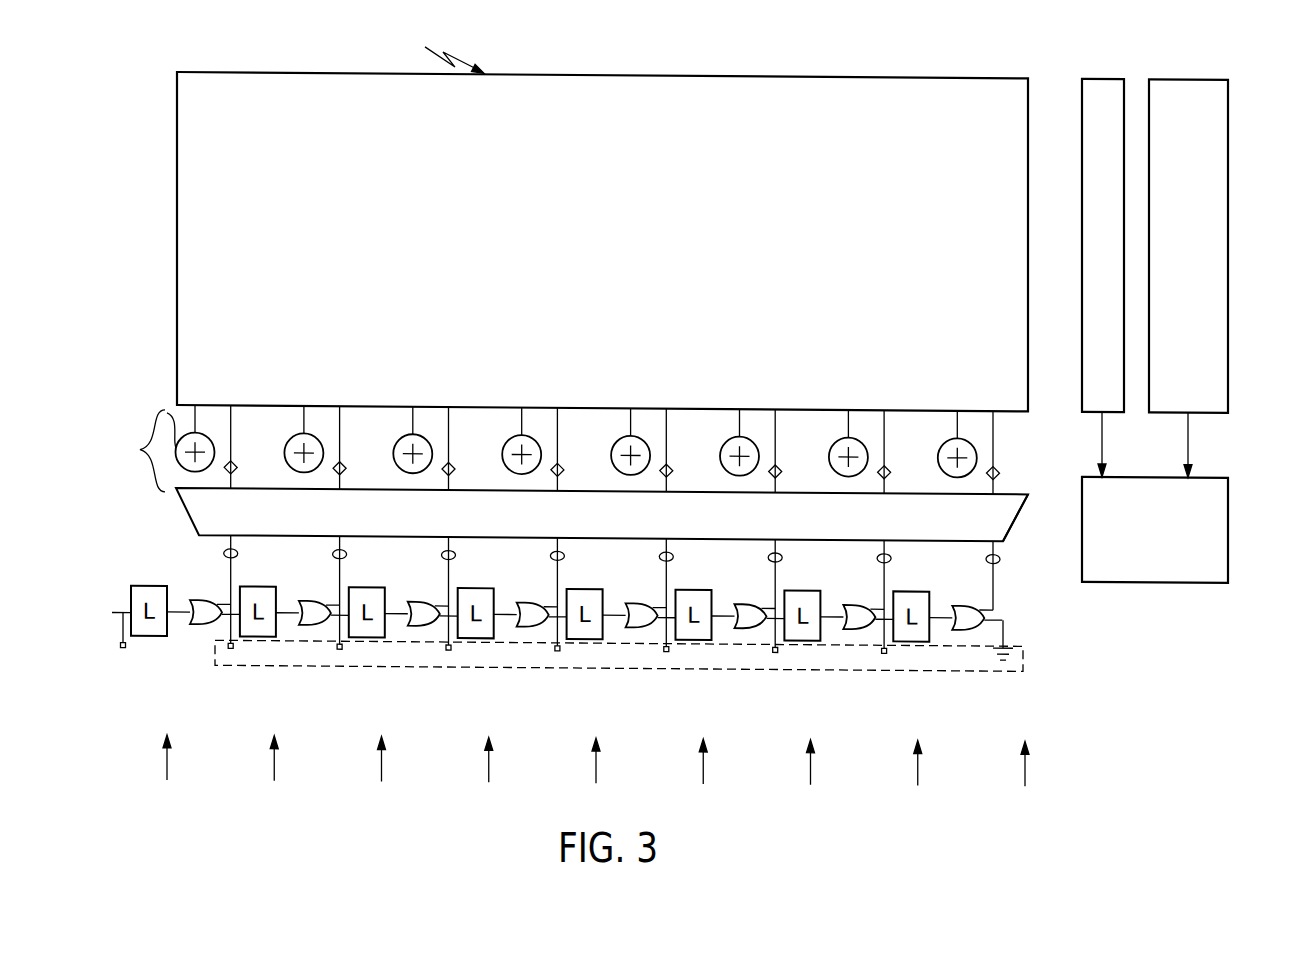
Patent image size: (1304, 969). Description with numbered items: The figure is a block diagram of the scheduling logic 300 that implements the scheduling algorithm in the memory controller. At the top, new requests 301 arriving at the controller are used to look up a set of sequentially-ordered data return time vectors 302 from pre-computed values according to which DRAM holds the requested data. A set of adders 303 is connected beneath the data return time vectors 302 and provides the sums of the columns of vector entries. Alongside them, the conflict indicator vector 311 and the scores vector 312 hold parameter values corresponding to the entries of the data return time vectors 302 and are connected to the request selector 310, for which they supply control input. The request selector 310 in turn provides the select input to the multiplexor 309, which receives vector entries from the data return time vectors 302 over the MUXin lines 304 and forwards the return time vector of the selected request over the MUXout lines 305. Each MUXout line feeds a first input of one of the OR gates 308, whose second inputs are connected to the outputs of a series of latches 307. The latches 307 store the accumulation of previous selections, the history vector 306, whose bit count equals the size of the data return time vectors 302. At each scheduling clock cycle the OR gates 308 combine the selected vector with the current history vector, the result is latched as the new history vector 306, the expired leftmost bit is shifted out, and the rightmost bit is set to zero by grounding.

The scheduling logic 300 is at (689, 45).
The new requests 301 is at (376, 48).
The data return time vectors 302 is at (177, 258).
The adders 303 is at (160, 411).
The MUXin lines 304 is at (212, 488).
The MUXout lines 305 is at (231, 548).
The history vector 306 is at (337, 688).
The latches 307 is at (131, 592).
The OR gates 308 is at (963, 607).
The multiplexor 309 is at (1014, 518).
The request selector 310 is at (1227, 525).
The conflict indicator vector 311 is at (1082, 88).
The scores vector 312 is at (1228, 154).